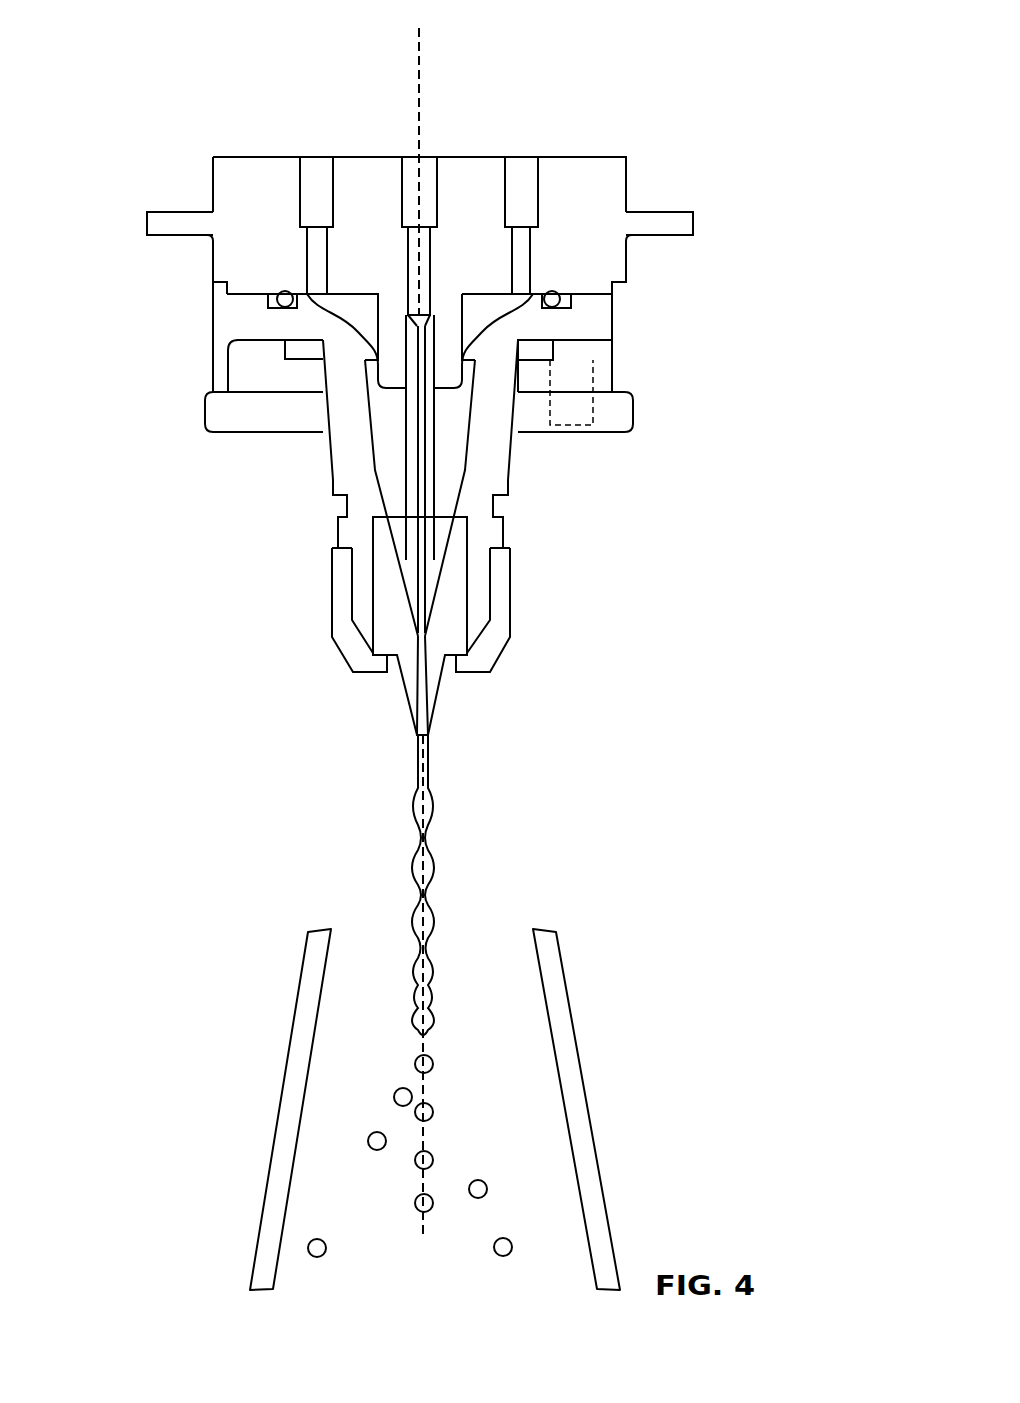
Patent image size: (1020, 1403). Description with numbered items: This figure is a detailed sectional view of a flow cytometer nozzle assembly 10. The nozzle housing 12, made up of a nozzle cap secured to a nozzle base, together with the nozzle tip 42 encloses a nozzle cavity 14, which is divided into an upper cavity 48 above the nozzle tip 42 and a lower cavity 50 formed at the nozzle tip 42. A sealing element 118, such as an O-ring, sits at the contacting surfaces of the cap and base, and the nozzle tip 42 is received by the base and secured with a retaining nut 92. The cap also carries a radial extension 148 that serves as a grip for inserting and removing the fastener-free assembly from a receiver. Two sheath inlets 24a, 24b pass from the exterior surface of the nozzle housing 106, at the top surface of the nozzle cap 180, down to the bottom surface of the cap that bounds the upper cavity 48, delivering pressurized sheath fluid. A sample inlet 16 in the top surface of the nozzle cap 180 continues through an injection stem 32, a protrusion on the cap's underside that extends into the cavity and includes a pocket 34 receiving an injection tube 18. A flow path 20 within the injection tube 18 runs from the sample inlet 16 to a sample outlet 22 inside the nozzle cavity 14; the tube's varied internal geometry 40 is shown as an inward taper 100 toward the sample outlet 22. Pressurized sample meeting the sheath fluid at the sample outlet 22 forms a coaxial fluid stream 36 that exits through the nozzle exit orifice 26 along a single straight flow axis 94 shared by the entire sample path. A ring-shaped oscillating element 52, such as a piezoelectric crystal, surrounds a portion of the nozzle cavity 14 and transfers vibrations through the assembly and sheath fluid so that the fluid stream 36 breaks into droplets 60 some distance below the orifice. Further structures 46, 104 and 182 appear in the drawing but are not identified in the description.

The nozzle assembly 10 is at (700, 136).
The nozzle housing 12 is at (205, 282).
The nozzle cavity 14 is at (387, 463).
The sample inlet 16 is at (428, 187).
The injection tube 18 is at (395, 528).
The flow path 20 is at (425, 442).
The sample outlet 22 is at (420, 640).
The sheath inlet 24a is at (303, 172).
The sheath inlet 24b is at (552, 157).
The nozzle exit orifice 26 is at (427, 737).
The injection stem 32 is at (392, 368).
The pocket 34 is at (414, 377).
The fluid stream 36 is at (413, 812).
The varied internal geometry 40 is at (405, 547).
The nozzle tip 42 is at (383, 607).
The electrode plates 46 is at (297, 1043).
The upper cavity 48 is at (457, 413).
The lower cavity 50 is at (405, 603).
The oscillating element 52 is at (557, 350).
The droplets 60 is at (432, 1203).
The retaining nut 92 is at (503, 657).
The flow axis 94 is at (418, 55).
The inward taper 100 is at (423, 563).
The inlet tube 104 is at (310, 180).
The exterior surface of the nozzle housing 106 is at (208, 190).
The sealing element 118 is at (236, 341).
The radial extension 148 is at (680, 215).
The nozzle cap surface 180 is at (527, 177).
The check ball 182 is at (270, 302).